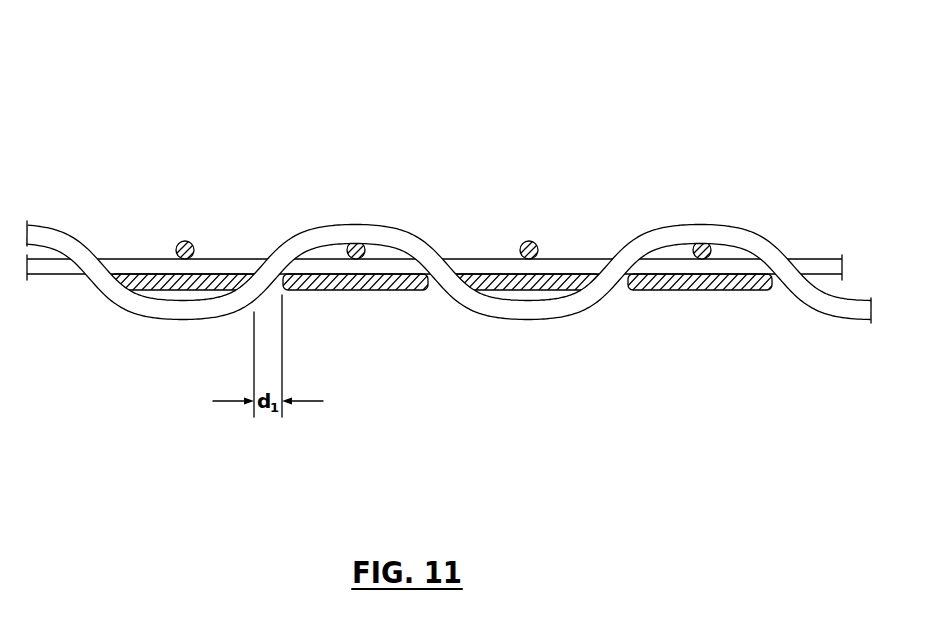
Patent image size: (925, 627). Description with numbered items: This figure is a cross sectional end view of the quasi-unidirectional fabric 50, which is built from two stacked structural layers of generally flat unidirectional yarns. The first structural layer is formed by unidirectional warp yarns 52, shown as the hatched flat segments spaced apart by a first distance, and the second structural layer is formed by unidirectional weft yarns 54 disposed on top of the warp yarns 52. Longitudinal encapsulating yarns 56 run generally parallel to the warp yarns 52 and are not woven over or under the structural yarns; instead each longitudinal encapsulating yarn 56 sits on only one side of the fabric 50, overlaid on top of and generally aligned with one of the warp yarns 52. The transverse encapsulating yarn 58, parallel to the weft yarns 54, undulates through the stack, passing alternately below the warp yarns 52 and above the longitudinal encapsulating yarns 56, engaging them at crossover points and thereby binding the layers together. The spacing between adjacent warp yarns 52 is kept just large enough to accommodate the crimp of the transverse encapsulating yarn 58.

The fabric 50 is at (110, 90).
The warp yarns 52 is at (143, 285).
The weft yarns 54 is at (127, 263).
The longitudinal encapsulating yarns 56 is at (186, 241).
The transverse encapsulating yarn 58 is at (303, 248).